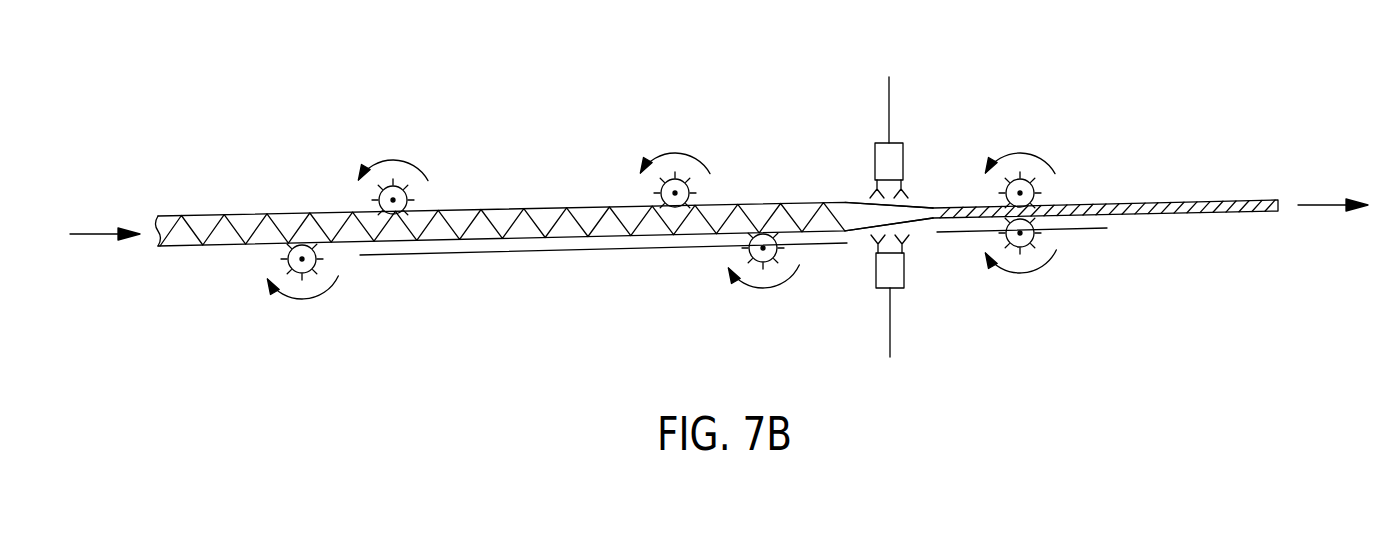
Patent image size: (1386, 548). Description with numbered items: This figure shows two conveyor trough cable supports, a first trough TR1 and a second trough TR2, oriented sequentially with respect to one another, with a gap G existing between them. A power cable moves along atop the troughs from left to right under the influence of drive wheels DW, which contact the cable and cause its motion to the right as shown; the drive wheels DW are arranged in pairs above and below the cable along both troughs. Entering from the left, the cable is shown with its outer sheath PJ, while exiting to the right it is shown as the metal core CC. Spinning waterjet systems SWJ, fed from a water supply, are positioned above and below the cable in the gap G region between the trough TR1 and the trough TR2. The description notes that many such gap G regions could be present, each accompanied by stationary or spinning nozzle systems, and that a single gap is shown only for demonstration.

The outer sheath PJ is at (231, 203).
The drive wheels DW is at (428, 197).
The trough TR1 is at (532, 259).
The trough TR2 is at (1097, 242).
The gap G is at (850, 188).
The spinning waterjet system SWJ is at (915, 158).
The metal core CC is at (1187, 192).